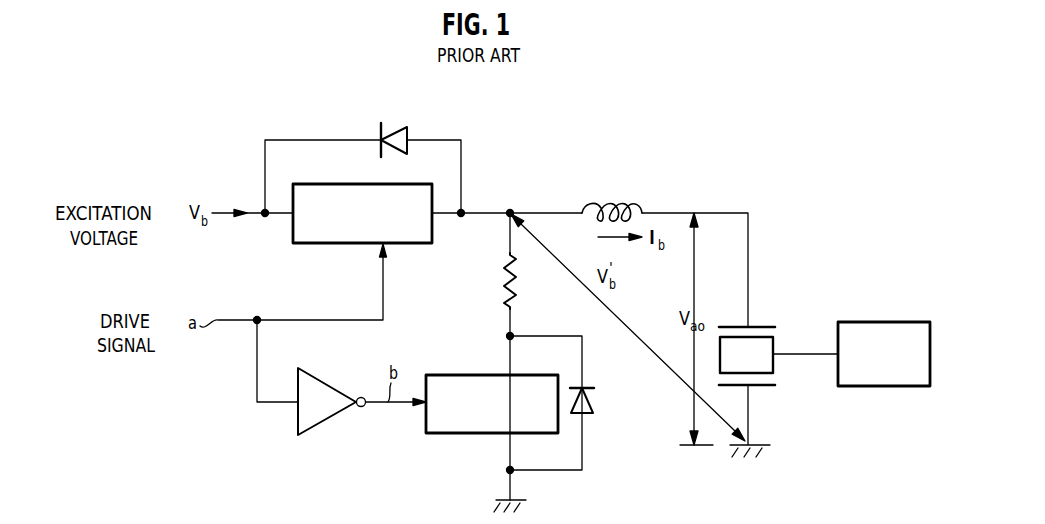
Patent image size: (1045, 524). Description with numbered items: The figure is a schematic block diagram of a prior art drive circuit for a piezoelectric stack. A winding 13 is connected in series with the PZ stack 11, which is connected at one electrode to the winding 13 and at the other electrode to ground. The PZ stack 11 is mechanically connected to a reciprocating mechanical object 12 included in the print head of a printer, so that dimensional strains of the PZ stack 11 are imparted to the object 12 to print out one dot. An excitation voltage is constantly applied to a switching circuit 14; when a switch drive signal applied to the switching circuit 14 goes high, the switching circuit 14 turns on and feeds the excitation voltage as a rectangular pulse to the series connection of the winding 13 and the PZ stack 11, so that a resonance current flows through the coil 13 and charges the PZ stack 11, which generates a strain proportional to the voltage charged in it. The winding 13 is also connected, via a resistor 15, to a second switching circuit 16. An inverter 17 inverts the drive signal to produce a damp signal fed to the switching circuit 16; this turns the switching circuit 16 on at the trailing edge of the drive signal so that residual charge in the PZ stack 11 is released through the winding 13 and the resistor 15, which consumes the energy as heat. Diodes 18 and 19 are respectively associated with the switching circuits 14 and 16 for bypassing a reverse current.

The PZ stack 11 is at (764, 324).
The reciprocating mechanical object 12 is at (858, 322).
The winding 13 is at (591, 207).
The switching circuit 14 is at (362, 244).
The resistor 15 is at (503, 279).
The switching circuit 16 is at (483, 434).
The inverter 17 is at (318, 434).
The diode 18 is at (400, 124).
The diode 19 is at (594, 403).